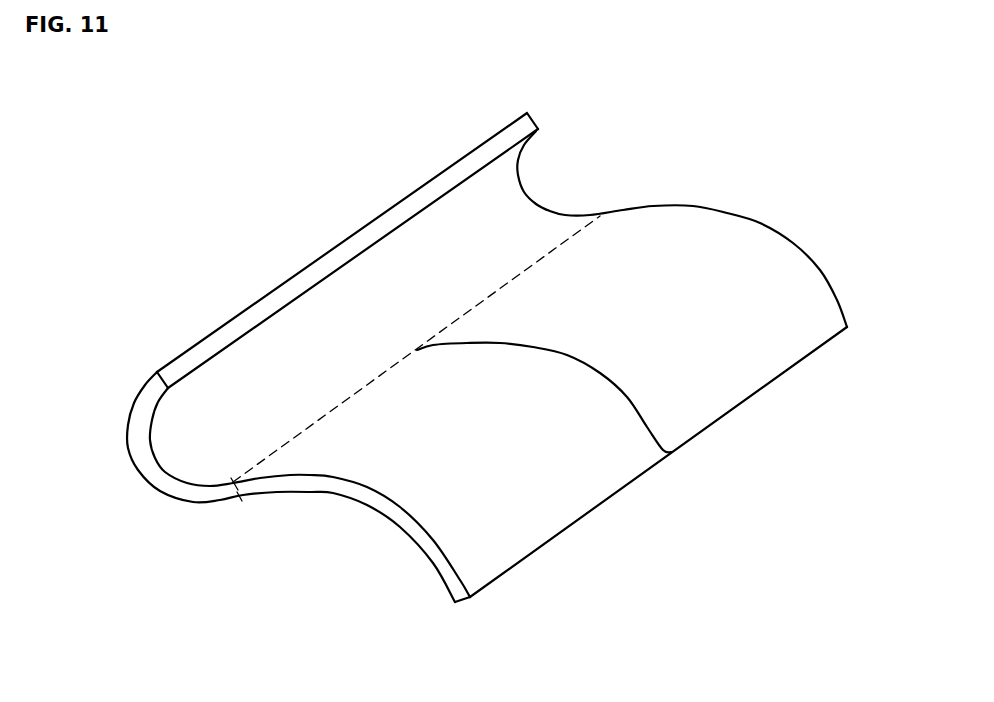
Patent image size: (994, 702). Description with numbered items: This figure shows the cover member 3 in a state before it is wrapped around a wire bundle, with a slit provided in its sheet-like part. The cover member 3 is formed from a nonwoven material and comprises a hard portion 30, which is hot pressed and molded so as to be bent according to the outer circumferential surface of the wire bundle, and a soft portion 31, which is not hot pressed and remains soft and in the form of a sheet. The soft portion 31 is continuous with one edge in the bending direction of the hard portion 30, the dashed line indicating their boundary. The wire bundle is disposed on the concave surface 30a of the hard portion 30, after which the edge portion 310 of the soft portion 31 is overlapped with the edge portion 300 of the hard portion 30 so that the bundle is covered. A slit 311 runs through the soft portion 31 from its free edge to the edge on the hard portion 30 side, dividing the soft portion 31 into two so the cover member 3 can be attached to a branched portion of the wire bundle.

The cover member 3 is at (590, 107).
The hard portion 30 is at (365, 312).
The concave surface 30a is at (223, 417).
The edge portion 300 is at (145, 390).
The soft portion 31 is at (593, 447).
The edge portion 310 is at (462, 588).
The slit 311 is at (672, 455).